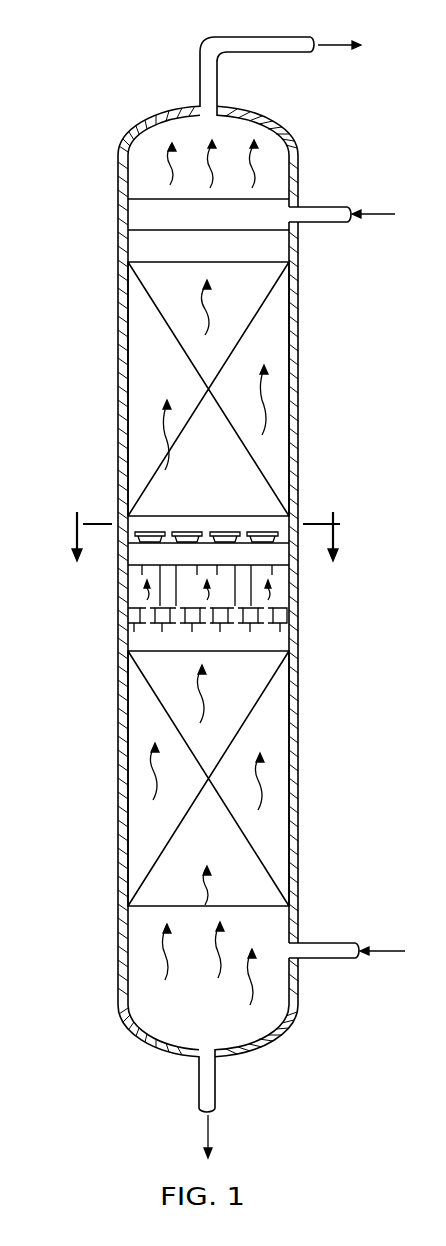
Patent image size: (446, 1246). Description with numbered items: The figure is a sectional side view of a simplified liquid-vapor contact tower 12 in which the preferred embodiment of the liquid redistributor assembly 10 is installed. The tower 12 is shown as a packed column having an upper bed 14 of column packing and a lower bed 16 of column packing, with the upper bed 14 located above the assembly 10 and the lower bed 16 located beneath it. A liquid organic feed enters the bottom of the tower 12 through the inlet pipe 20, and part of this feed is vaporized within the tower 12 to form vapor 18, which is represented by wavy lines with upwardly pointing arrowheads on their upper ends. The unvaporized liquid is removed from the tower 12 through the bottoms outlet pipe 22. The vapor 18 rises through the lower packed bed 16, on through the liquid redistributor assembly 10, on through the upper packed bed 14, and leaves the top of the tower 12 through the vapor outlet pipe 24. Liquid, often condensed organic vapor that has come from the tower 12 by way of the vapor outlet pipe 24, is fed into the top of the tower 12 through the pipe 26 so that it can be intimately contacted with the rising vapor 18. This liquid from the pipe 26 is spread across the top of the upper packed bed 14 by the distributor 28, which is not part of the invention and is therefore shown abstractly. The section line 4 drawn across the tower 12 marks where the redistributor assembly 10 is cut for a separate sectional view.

The vapor-liquid contacting tray assembly 10 is at (112, 542).
The column vessel 12 is at (147, 66).
The upper packed bed 14 is at (264, 348).
The lower packed bed 16 is at (266, 738).
The upward vapor flow 18 is at (208, 887).
The vapor inlet pipe 20 is at (315, 932).
The liquid outlet pipe 22 is at (215, 1090).
The vapor outlet pipe 24 is at (217, 78).
The liquid inlet pipe 26 is at (312, 206).
The liquid distributor tray 28 is at (152, 214).
The section line 4- 4 is at (206, 536).